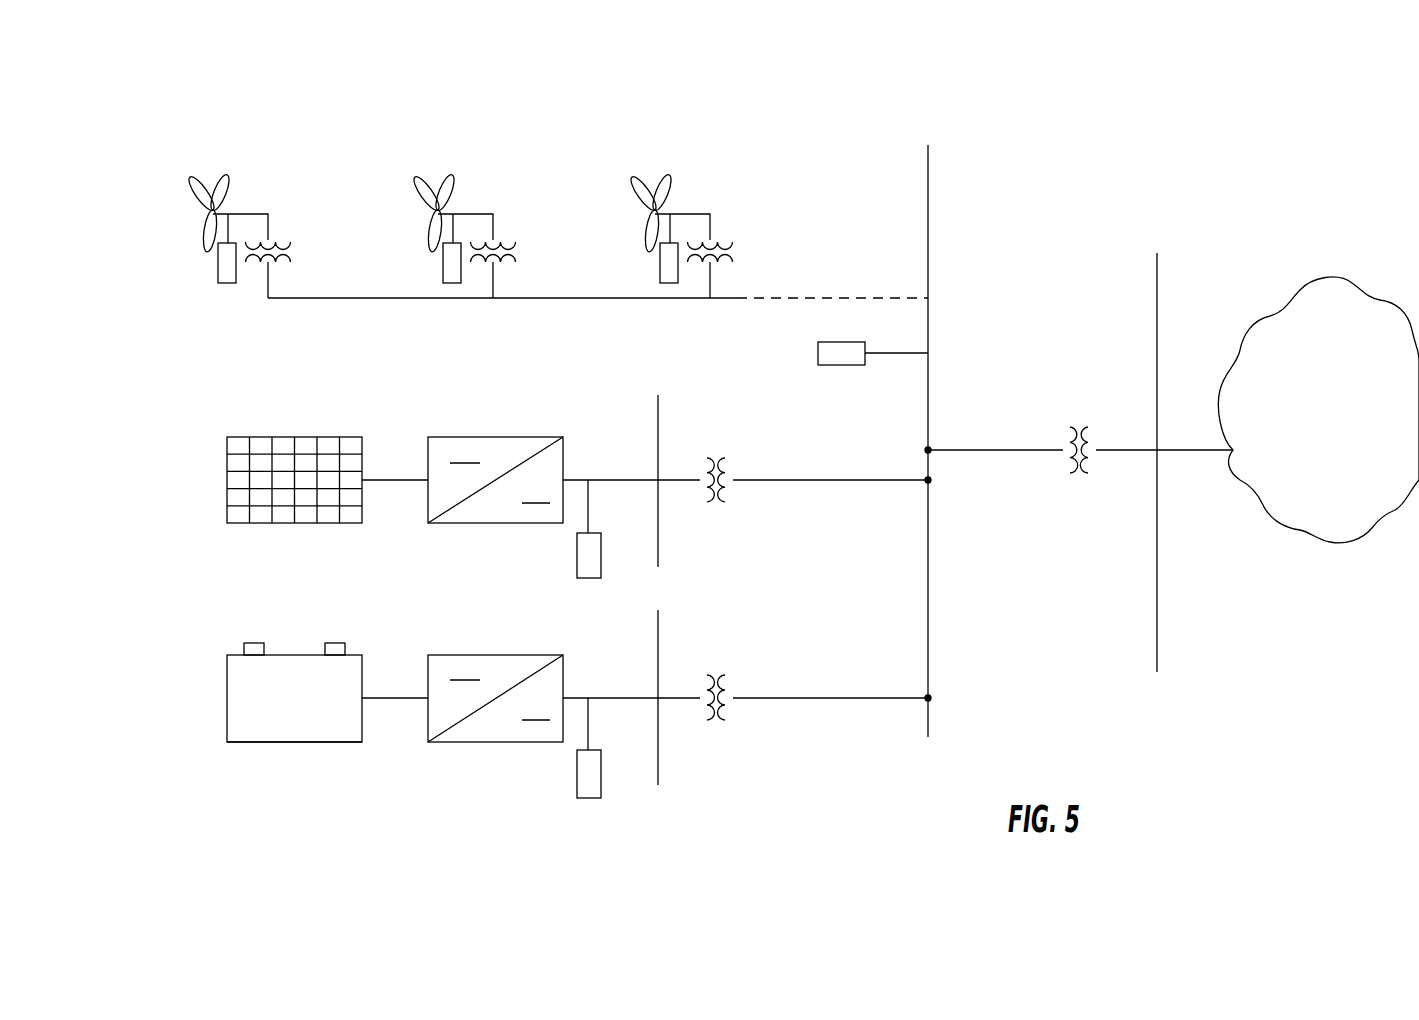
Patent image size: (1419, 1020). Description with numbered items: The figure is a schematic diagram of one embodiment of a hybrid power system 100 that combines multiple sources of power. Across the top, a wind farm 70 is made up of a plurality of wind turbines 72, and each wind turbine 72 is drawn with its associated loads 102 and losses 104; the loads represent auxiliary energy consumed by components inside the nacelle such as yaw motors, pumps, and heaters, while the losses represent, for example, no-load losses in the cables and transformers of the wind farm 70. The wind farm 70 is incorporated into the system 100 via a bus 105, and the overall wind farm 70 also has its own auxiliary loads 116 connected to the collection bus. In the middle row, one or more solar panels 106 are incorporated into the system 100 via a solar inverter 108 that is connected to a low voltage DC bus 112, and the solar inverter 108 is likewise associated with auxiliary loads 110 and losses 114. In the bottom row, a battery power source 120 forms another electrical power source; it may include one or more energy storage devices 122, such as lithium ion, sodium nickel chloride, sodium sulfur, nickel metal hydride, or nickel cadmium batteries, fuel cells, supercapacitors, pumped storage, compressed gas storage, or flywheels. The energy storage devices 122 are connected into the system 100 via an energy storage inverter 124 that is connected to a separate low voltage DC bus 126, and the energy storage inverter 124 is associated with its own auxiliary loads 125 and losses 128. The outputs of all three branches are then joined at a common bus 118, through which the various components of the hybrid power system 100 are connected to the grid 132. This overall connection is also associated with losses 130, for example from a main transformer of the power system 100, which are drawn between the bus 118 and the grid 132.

The hybrid power system 100 is at (103, 170).
The wind farm 70 is at (545, 155).
The wind turbines 72 is at (435, 177).
The loads 102 is at (226, 285).
The losses 104 is at (290, 252).
The bus 105 is at (418, 300).
The solar panels 106 is at (227, 466).
The solar inverter 108 is at (490, 437).
The auxiliary loads 110 is at (601, 560).
The low voltage DC bus 112 is at (658, 395).
The losses 114 is at (717, 460).
The auxiliary loads 116 is at (835, 342).
The bus 118 is at (928, 145).
The battery power source 120 is at (215, 705).
The energy storage devices 122 is at (310, 743).
The energy storage inverter 124 is at (495, 667).
The auxiliary loads 125 is at (601, 778).
The low voltage DC bus 126 is at (672, 628).
The losses 128 is at (717, 674).
The losses 130 is at (1077, 476).
The grid 132 is at (1306, 463).